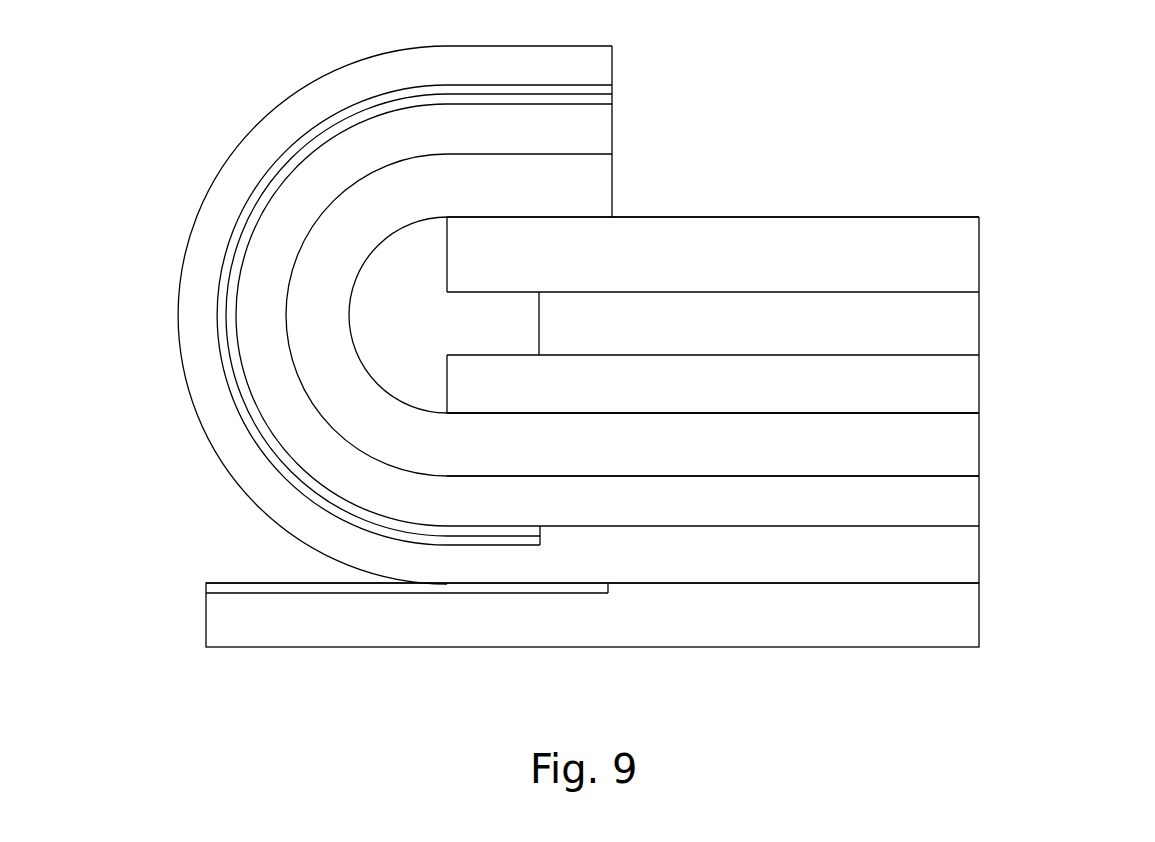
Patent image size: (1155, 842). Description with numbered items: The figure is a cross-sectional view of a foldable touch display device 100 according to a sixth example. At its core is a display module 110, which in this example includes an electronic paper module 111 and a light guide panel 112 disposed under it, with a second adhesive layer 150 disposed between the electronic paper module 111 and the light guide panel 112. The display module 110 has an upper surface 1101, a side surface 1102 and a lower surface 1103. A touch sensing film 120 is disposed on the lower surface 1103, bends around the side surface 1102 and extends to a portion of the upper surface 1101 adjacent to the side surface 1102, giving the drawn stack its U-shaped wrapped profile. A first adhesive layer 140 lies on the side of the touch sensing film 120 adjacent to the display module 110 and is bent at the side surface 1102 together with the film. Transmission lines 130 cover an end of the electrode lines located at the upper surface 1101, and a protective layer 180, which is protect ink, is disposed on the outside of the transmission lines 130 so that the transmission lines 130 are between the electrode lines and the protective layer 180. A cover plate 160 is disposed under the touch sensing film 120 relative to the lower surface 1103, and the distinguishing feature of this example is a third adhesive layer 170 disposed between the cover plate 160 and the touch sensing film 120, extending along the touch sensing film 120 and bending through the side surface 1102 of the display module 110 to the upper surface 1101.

The foldable touch display device 100 is at (220, 54).
The display module 110 is at (784, 428).
The electronic paper module 111 is at (970, 264).
The light guide panel 112 is at (970, 387).
The upper surface 1101 is at (750, 217).
The side surface 1102 is at (446, 383).
The lower surface 1103 is at (723, 412).
The touch sensing film 120 is at (973, 500).
The transmission lines 130 is at (232, 308).
The first adhesive layer 140 is at (973, 443).
The second adhesive layer 150 is at (853, 315).
The cover plate 160 is at (973, 616).
The third adhesive layer 170 is at (208, 228).
The protective layer 180 is at (222, 268).